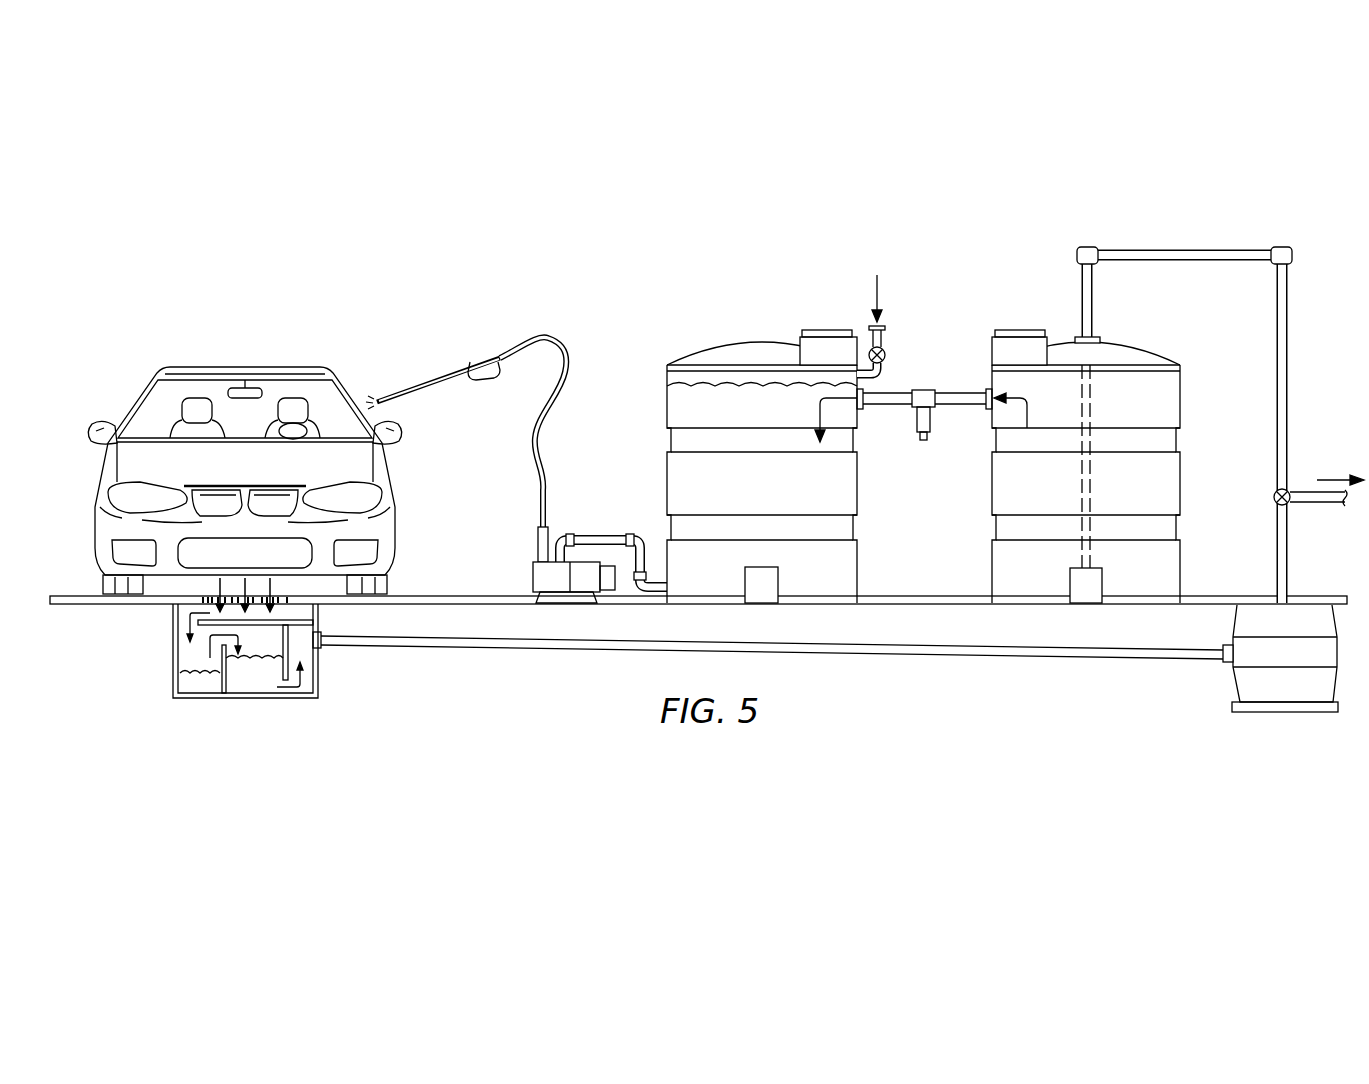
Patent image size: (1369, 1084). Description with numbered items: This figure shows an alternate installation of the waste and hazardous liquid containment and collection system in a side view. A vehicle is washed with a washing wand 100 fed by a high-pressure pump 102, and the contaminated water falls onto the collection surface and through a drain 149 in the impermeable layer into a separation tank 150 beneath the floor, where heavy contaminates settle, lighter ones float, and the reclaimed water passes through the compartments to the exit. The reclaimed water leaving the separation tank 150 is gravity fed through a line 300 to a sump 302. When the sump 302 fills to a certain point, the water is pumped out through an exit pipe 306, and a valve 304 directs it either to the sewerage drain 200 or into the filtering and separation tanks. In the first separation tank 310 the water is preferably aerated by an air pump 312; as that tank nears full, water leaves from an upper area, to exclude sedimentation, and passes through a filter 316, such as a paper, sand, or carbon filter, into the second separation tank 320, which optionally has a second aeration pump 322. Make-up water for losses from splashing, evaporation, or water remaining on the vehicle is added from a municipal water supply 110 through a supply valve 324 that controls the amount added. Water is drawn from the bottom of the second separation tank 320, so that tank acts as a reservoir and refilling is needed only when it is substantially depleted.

The washing wand 100 is at (473, 365).
The high-pressure pump 102 is at (536, 582).
The municipal water supply 110 is at (888, 338).
The drain 149 is at (282, 581).
The separation tank 150 is at (297, 698).
The sewerage drain 200 is at (1305, 490).
The line 300 is at (556, 650).
The sump 302 is at (1270, 712).
The valve 304 is at (1274, 496).
The exit pipe 306 is at (1277, 318).
The first separation tank 310 is at (1133, 348).
The air pump 312 is at (1068, 584).
The filter 316 is at (926, 441).
The second separation tank 320 is at (703, 352).
The second aeration pump 322 is at (777, 590).
The supply valve 324 is at (888, 355).